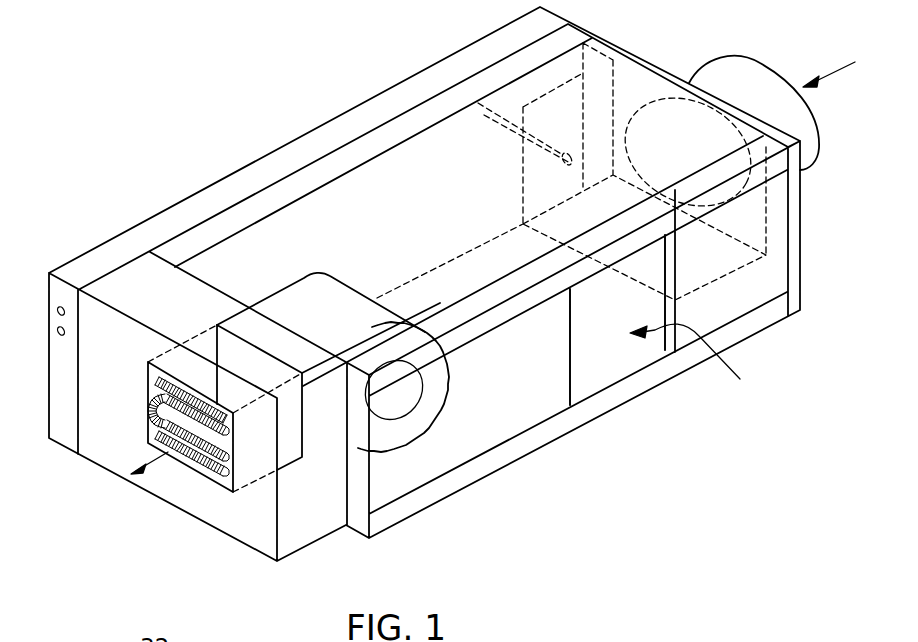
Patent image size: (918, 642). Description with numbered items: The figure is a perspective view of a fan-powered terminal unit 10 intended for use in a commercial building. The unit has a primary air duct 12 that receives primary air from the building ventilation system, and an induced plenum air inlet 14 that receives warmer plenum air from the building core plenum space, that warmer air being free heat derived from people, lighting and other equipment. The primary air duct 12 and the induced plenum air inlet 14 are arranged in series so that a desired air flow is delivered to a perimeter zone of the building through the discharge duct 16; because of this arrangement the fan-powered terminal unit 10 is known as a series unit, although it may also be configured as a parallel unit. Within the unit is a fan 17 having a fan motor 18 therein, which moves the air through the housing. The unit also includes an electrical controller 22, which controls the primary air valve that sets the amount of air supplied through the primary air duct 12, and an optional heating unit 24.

The fan-powered terminal unit 10 is at (155, 189).
The primary air duct 12 is at (770, 87).
The induced plenum air inlet 14 is at (625, 361).
The discharge duct 16 is at (227, 482).
The fan 17 is at (441, 374).
The fan motor 18 is at (399, 407).
The electrical controller 22 is at (305, 134).
The heating unit 24 is at (157, 419).